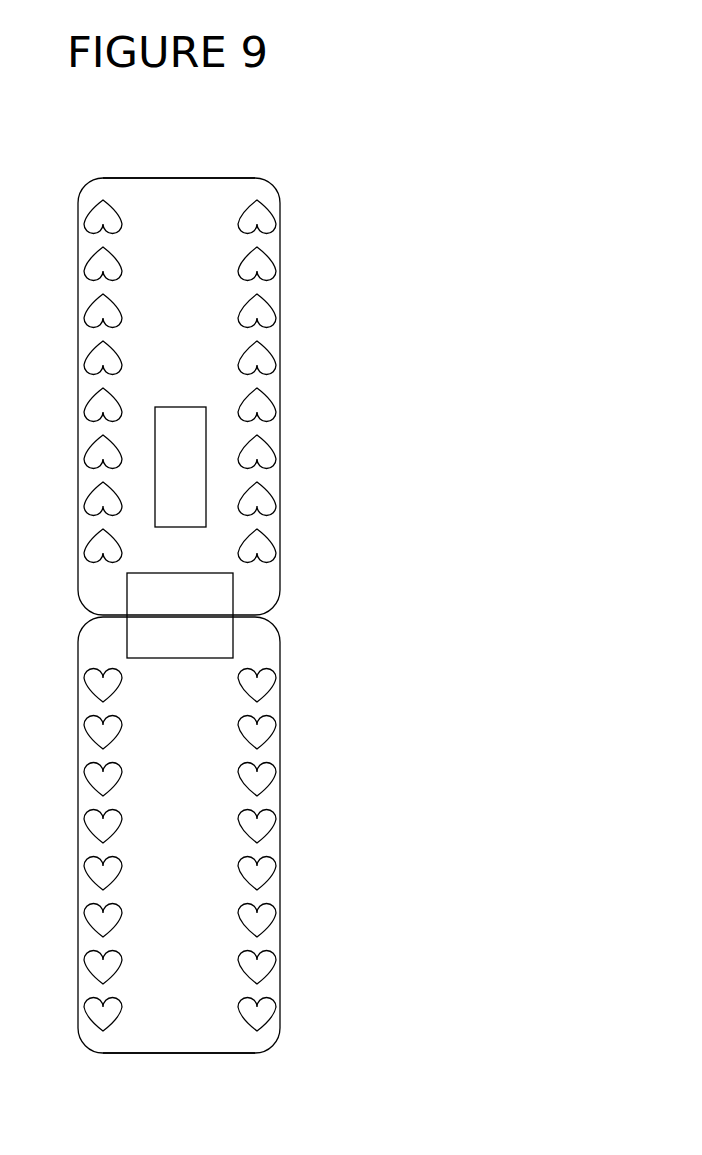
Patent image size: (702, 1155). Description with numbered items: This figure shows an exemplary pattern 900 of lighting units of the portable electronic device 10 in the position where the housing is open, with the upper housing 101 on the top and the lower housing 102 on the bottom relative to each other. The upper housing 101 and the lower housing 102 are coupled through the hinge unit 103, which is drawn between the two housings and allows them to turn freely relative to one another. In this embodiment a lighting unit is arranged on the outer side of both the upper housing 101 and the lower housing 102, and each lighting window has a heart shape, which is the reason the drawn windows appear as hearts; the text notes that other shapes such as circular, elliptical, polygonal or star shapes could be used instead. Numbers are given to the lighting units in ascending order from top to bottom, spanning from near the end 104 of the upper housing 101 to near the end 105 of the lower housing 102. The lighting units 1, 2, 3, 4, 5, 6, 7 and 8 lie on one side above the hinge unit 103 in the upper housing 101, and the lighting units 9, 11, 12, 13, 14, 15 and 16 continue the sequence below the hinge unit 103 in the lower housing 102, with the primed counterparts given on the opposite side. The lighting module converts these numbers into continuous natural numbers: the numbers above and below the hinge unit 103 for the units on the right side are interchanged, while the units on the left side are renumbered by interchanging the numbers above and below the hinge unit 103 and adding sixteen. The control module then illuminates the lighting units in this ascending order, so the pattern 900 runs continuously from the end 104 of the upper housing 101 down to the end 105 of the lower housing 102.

The connector layout 900 is at (160, 178).
The portable electronic device 10 is at (315, 145).
The upper housing 101 is at (145, 220).
The lower housing 102 is at (180, 1013).
The hinge unit 103 is at (202, 642).
The end of the upper housing 104 is at (212, 187).
The end of the lower housing 105 is at (223, 1042).
The lighting unit 1 is at (182, 218).
The lighting unit 2 is at (182, 265).
The lighting unit 3 is at (182, 312).
The lighting unit 4 is at (182, 359).
The lighting unit 5 is at (182, 406).
The lighting unit 6 is at (182, 453).
The lighting unit 7 is at (182, 500).
The lighting unit 8 is at (182, 547).
The lighting unit 9 is at (184, 686).
The lighting unit 11 is at (183, 780).
The lighting unit 12 is at (183, 827).
The lighting unit 13 is at (183, 874).
The lighting unit 14 is at (183, 921).
The lighting unit 15 is at (183, 968).
The lighting unit 16 is at (183, 1015).